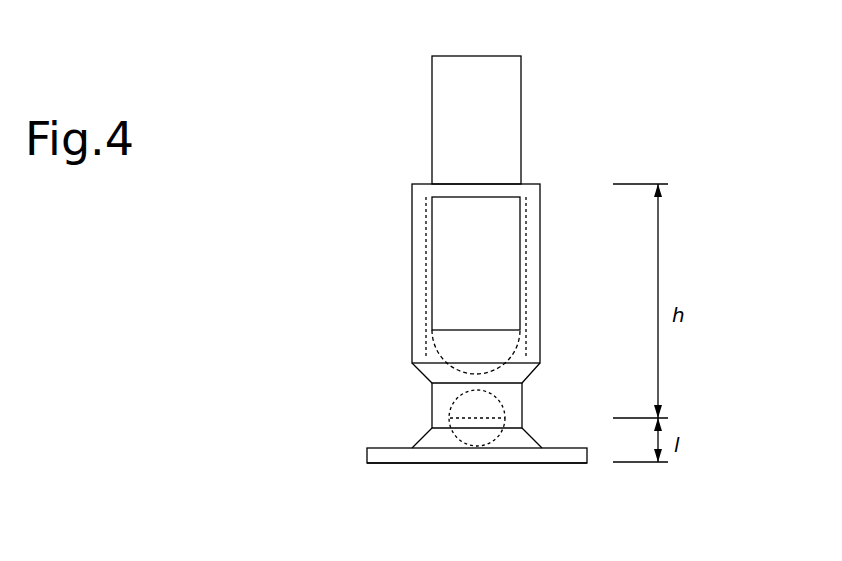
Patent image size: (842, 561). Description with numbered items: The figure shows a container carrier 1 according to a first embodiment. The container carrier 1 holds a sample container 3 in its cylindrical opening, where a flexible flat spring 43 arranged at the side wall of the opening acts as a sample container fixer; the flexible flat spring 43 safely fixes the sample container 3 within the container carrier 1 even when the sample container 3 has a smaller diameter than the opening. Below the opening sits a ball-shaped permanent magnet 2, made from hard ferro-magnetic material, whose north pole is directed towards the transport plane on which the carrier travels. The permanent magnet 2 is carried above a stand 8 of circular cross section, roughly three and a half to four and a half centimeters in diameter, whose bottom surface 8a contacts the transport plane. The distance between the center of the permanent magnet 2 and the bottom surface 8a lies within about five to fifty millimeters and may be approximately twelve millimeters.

The container carrier 1 is at (374, 184).
The permanent magnet 2 is at (460, 413).
The sample container 3 is at (432, 111).
The stand 8 is at (408, 454).
The bottom surface 8a is at (432, 463).
The flexible flat spring 43 is at (432, 218).